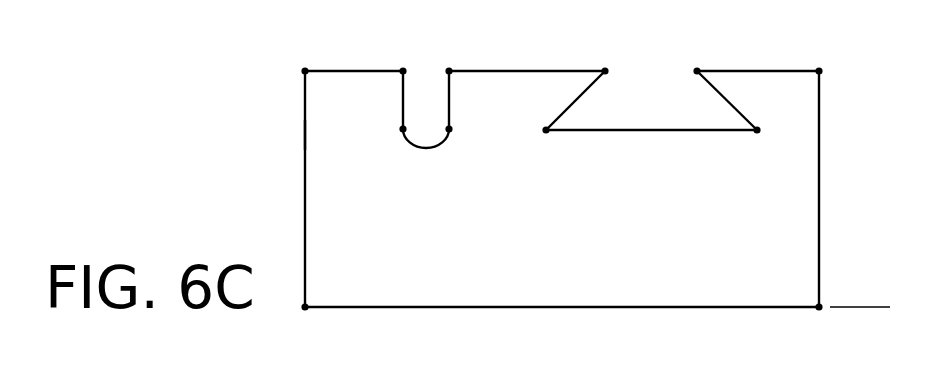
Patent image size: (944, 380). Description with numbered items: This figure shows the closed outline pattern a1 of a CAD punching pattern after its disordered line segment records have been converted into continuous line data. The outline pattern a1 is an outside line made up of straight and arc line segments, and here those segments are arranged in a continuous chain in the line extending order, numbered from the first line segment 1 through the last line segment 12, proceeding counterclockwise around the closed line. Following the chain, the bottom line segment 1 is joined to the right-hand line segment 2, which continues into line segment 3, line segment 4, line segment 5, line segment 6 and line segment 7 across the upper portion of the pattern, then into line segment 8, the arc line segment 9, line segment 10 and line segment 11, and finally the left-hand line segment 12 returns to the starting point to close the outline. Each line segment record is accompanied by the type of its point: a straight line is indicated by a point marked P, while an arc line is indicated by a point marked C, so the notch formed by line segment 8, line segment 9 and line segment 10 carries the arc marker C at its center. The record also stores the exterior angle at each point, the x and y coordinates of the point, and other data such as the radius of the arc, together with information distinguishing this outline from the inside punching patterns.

The line segment 1 is at (562, 327).
The line segment 2 is at (833, 189).
The line segment 3 is at (758, 54).
The line segment 4 is at (729, 100).
The line segment 5 is at (651, 147).
The line segment 6 is at (571, 100).
The line segment 7 is at (527, 54).
The line segment 8 is at (465, 100).
The line segment 9 is at (426, 156).
The line segment 10 is at (385, 100).
The line segment 11 is at (354, 54).
The line segment 12 is at (287, 189).
The closed outline pattern a1 is at (305, 136).
The straight line point type P is at (561, 189).
The arc line point type C is at (424, 125).